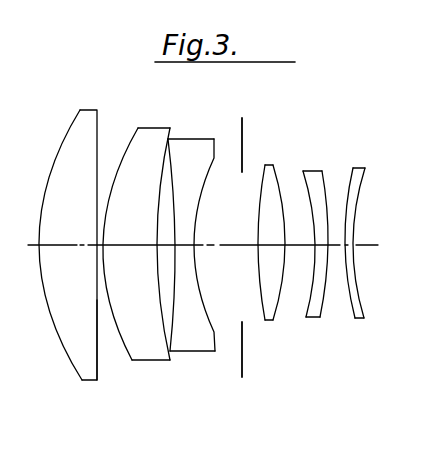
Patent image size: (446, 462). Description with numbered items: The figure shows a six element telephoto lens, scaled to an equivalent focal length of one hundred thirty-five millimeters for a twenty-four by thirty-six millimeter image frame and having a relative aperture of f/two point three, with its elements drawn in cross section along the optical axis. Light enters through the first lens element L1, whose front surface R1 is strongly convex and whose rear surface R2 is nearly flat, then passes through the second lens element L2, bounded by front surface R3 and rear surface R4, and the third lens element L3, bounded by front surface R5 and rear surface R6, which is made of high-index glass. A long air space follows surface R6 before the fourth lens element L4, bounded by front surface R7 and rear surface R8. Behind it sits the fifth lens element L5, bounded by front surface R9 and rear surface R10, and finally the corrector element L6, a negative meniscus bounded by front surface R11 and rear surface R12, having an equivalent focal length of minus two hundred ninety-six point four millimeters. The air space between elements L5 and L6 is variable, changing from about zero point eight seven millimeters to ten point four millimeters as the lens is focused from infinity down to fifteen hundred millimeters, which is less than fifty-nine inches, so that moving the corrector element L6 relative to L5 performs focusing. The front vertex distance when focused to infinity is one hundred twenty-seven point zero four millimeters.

The first lens element L1 is at (80, 239).
The second lens element L2 is at (139, 243).
The third lens element L3 is at (185, 221).
The fourth lens element L4 is at (287, 242).
The fifth lens element L5 is at (356, 245).
The corrector element L6 is at (370, 223).
The front surface of first lens R1 is at (53, 326).
The rear surface of first lens R2 is at (98, 362).
The front surface of second lens R3 is at (125, 352).
The rear surface of second lens R4 is at (158, 213).
The front surface of third lens R5 is at (172, 293).
The rear surface of third lens R6 is at (205, 292).
The front surface of fourth lens R7 is at (264, 308).
The rear surface of fourth lens R8 is at (276, 309).
The front surface of fifth lens R9 is at (303, 305).
The rear surface of fifth lens R10 is at (322, 305).
The front surface of corrector element R11 is at (348, 198).
The rear surface of corrector element R12 is at (353, 215).